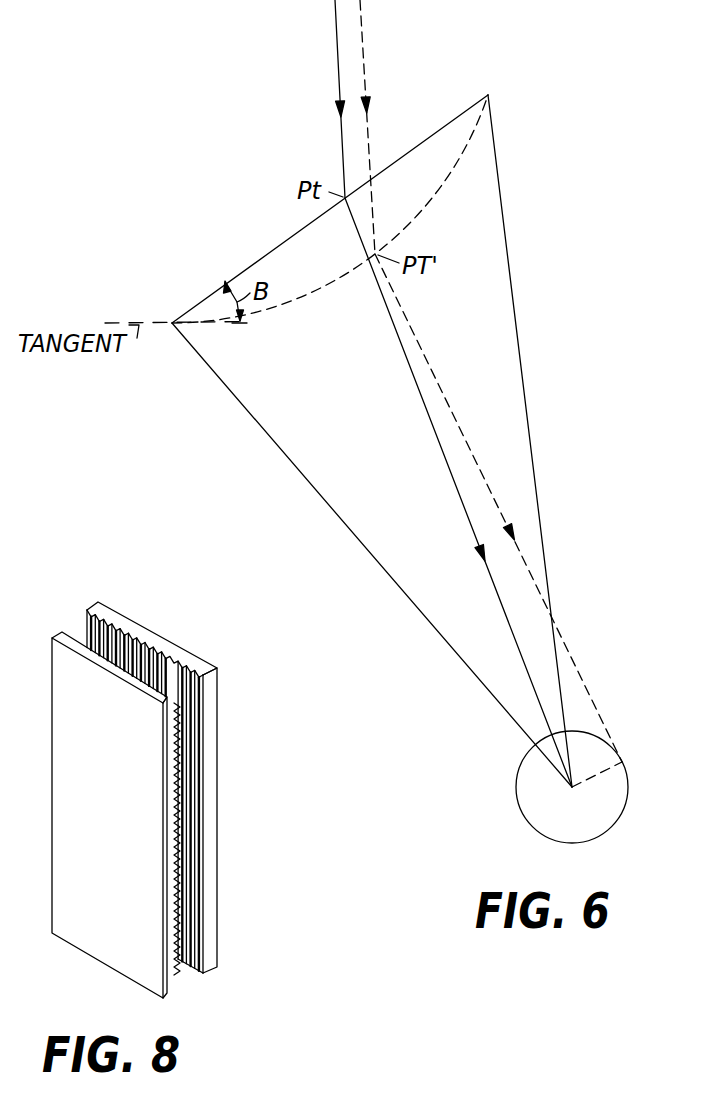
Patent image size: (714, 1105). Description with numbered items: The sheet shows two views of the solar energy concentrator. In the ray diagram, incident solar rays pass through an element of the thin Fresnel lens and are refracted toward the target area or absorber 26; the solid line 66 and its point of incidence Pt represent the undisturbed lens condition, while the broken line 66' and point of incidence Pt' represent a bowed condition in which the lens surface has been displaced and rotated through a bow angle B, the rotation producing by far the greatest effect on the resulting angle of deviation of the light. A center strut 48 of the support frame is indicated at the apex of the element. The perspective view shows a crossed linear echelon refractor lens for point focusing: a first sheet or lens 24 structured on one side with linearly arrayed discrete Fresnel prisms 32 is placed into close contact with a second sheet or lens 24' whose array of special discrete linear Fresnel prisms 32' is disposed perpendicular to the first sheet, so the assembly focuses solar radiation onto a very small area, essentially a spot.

In FIG. 6, the center struts 48 is at (489, 93).
In FIG. 6, the solid line 66 is at (330, 207).
In FIG. 6, the broken line 66' is at (330, 209).
In FIG. 6, the target area or absorber 26 is at (514, 789).
In FIG. 8, the lens 24 is at (152, 772).
In FIG. 8, the Fresnel prisms 32 is at (163, 791).
In FIG. 8, the second sheet or lens 24' is at (93, 815).
In FIG. 8, the special discrete linear Fresnel prisms 32' is at (204, 861).